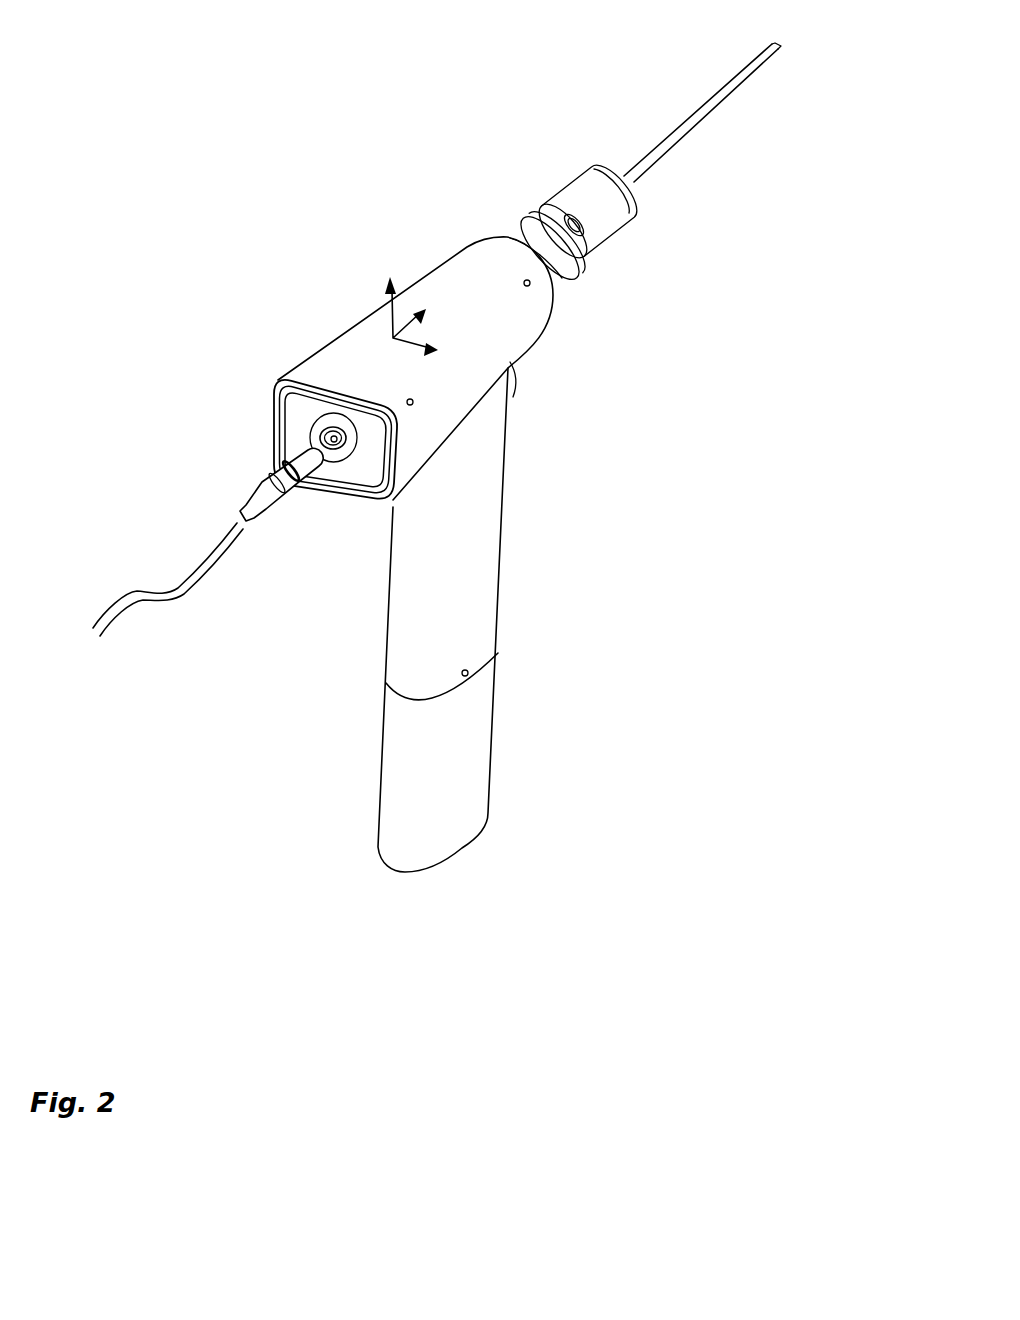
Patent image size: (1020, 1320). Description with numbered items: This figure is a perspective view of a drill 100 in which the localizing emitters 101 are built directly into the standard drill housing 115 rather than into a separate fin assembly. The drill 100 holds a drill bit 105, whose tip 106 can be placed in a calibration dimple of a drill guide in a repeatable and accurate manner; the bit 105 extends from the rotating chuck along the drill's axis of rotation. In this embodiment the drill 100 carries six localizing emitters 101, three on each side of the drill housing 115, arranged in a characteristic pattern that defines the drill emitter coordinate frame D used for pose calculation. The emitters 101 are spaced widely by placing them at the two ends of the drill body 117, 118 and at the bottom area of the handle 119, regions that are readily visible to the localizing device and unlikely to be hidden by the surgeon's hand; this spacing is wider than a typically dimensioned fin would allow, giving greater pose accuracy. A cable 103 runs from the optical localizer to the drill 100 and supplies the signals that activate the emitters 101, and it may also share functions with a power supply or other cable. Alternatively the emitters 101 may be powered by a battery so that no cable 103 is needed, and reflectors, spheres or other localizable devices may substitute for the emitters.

The drill 100 is at (553, 485).
The localizing emitters 101 is at (464, 671).
The cable 103 is at (196, 576).
The drill bit 105 is at (680, 133).
The tip 106 is at (775, 44).
The drill housing 115 is at (490, 331).
The end of the drill body 117 is at (543, 302).
The end of the drill body 118 is at (427, 423).
The handle 119 is at (467, 637).